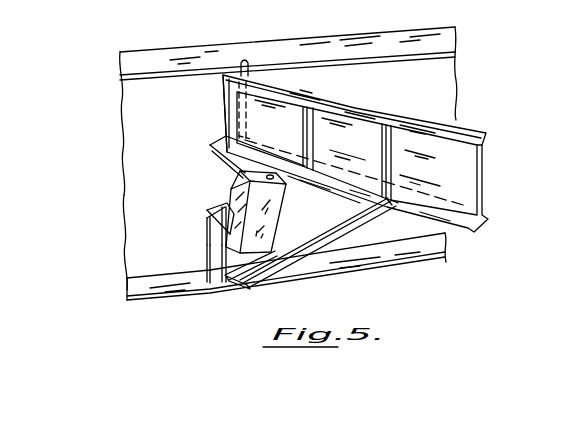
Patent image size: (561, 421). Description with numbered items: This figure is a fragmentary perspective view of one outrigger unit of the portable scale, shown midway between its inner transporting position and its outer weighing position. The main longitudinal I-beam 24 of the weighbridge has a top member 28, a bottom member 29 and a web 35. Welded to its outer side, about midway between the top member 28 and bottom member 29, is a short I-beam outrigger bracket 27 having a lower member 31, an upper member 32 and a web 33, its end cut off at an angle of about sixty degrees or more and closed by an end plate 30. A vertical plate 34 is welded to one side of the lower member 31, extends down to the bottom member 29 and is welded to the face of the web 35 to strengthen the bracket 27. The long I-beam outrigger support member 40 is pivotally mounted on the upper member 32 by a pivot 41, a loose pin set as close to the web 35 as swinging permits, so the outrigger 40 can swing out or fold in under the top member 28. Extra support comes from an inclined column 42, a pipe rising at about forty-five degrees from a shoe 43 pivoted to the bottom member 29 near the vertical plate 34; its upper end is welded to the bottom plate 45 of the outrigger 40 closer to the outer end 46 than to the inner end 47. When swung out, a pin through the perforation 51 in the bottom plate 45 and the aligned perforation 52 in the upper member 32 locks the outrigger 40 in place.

The I-beam 24 is at (118, 153).
The outrigger bracket 27 is at (226, 203).
The top member 28 is at (126, 70).
The bottom member 29 is at (126, 291).
The end plate 30 is at (280, 229).
The lower member 31 is at (211, 229).
The upper member 32 is at (232, 165).
The web 33 is at (236, 193).
The vertical plate 34 is at (219, 258).
The web 35 is at (130, 241).
The outrigger support member 40 is at (436, 110).
The pivot 41 is at (229, 95).
The inclined column 42 is at (338, 226).
The shoe 43 is at (255, 288).
The bottom plate 45 is at (404, 203).
The outer end 46 is at (463, 188).
The inner end 47 is at (225, 113).
The perforation 51 is at (262, 140).
The perforation 52 is at (252, 184).